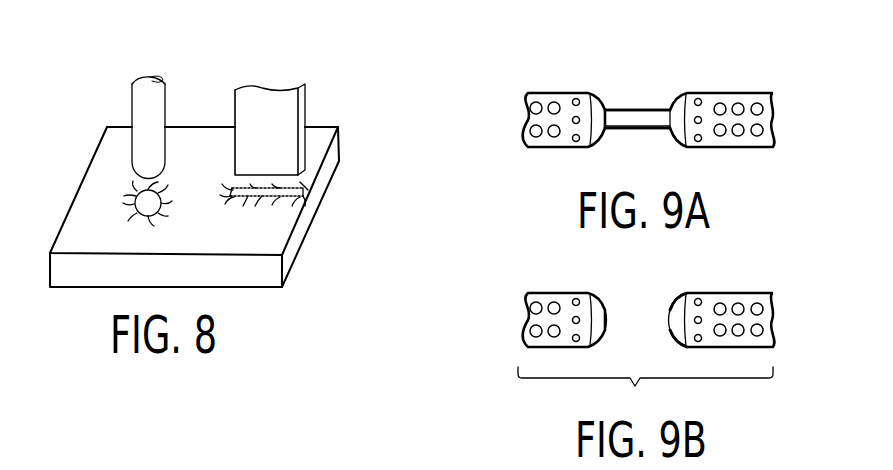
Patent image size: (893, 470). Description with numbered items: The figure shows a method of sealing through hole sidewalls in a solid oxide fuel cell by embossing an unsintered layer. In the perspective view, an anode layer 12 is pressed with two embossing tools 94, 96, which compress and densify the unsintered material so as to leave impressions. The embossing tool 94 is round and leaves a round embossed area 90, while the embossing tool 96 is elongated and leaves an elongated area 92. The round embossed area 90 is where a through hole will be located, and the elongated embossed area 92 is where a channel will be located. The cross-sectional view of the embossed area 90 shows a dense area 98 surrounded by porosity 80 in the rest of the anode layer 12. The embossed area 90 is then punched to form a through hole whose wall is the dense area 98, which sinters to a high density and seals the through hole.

In FIG. 8, the anode layer 12 is at (338, 157).
In FIG. 9A, the anode layer 12 is at (771, 118).
In FIG. 9B, the anode layer 12 is at (771, 318).
In FIG. 9A, the porosity 80 is at (740, 104).
In FIG. 8, the round embossed area 90 is at (137, 198).
In FIG. 9A, the round embossed area 90 is at (673, 83).
In FIG. 8, the elongated embossed area 92 is at (283, 193).
In FIG. 8, the round embossing tool 94 is at (140, 96).
In FIG. 8, the elongated embossing tool 96 is at (246, 97).
In FIG. 9A, the dense area 98 is at (632, 86).
In FIG. 9B, the dense area 98 is at (672, 310).